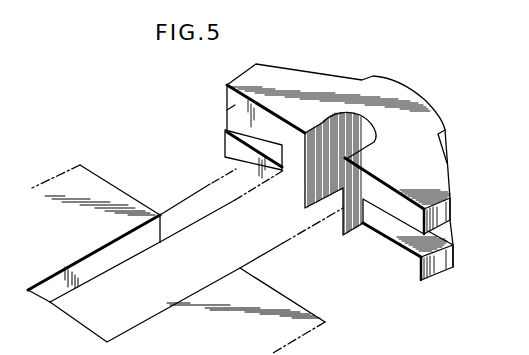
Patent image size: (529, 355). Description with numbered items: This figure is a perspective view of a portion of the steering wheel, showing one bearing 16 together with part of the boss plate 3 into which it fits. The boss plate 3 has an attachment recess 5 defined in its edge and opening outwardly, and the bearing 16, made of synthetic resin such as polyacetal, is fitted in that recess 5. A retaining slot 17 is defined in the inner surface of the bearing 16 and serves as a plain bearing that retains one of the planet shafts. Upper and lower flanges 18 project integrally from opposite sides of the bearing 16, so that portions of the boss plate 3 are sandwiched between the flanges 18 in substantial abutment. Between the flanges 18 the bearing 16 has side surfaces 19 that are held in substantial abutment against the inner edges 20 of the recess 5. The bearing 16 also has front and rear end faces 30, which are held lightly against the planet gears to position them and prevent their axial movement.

The boss plate 3 is at (128, 207).
The attachment recesses 5 is at (60, 304).
The bearing 16 is at (398, 83).
The retaining slot 17 is at (328, 123).
The upper and lower flanges 18 is at (226, 107).
The side surfaces 19 is at (365, 244).
The inner edges 20 is at (167, 305).
The front and rear end faces 30 is at (365, 73).